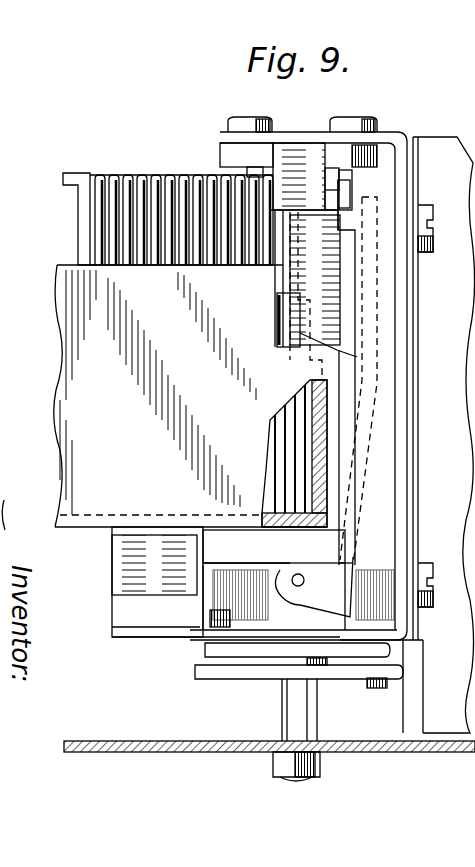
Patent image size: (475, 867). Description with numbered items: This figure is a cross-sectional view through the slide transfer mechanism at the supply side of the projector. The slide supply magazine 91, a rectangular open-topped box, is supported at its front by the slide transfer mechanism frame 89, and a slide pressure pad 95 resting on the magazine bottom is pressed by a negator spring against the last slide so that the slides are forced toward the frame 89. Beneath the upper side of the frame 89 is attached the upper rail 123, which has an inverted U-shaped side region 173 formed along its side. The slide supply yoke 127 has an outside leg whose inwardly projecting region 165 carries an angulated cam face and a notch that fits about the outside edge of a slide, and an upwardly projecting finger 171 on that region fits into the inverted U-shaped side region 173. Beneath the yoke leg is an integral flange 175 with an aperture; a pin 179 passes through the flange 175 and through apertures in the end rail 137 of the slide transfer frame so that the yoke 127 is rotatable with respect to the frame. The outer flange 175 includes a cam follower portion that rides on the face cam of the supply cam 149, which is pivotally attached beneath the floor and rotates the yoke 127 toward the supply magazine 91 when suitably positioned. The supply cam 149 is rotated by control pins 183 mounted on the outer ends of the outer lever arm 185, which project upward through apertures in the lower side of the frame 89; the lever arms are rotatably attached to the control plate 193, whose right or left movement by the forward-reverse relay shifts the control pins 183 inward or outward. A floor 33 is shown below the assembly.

The floor 33 is at (403, 752).
The slide transfer mechanism frame 89 is at (393, 137).
The slide supply magazine 91 is at (75, 295).
The slide pressure pad 95 is at (85, 207).
The upper rail 123 is at (377, 143).
The slide supply yoke 127 is at (350, 458).
The end rail 137 is at (235, 580).
The supply cam 149 is at (272, 620).
The inwardly projecting region 165 is at (348, 287).
The upwardly projecting finger 171 is at (340, 197).
The inverted U-shaped side region 173 is at (333, 168).
The flange 175 is at (300, 568).
The pin 179 is at (294, 576).
The control pin 183 is at (210, 622).
The outer lever arm 185 is at (205, 650).
The control plate 193 is at (200, 672).